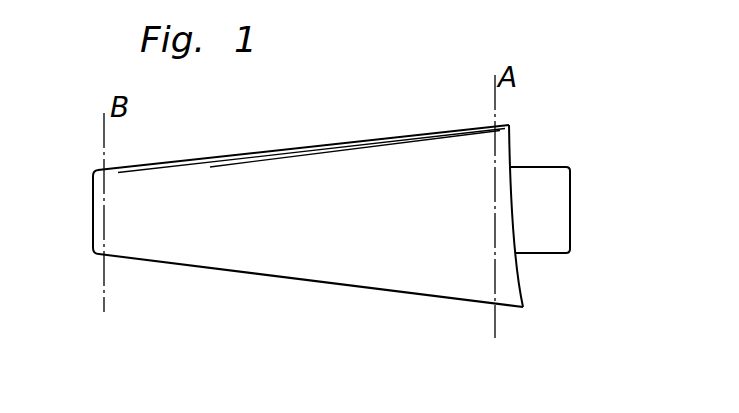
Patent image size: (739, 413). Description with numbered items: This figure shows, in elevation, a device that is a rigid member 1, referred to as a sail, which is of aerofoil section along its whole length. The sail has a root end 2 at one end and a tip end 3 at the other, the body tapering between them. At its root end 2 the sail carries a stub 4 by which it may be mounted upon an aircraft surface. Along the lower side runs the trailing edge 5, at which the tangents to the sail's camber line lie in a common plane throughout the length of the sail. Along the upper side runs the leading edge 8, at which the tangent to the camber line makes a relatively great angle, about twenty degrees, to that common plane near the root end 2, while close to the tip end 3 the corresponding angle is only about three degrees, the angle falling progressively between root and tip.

The rigid member 1 is at (304, 218).
The root end 2 is at (528, 142).
The tip end 3 is at (80, 182).
The stub 4 is at (553, 167).
The trailing edge 5 is at (343, 287).
The leading edge 8 is at (308, 147).